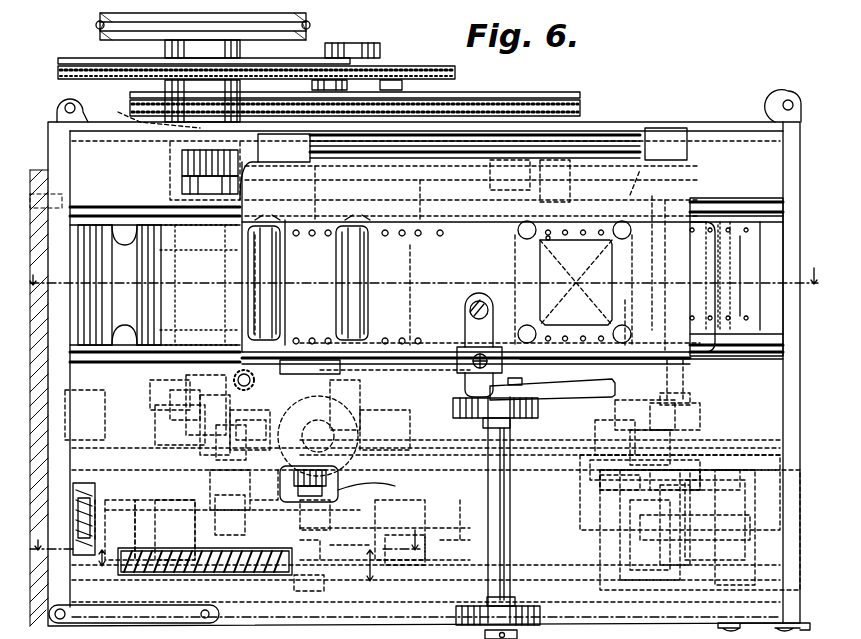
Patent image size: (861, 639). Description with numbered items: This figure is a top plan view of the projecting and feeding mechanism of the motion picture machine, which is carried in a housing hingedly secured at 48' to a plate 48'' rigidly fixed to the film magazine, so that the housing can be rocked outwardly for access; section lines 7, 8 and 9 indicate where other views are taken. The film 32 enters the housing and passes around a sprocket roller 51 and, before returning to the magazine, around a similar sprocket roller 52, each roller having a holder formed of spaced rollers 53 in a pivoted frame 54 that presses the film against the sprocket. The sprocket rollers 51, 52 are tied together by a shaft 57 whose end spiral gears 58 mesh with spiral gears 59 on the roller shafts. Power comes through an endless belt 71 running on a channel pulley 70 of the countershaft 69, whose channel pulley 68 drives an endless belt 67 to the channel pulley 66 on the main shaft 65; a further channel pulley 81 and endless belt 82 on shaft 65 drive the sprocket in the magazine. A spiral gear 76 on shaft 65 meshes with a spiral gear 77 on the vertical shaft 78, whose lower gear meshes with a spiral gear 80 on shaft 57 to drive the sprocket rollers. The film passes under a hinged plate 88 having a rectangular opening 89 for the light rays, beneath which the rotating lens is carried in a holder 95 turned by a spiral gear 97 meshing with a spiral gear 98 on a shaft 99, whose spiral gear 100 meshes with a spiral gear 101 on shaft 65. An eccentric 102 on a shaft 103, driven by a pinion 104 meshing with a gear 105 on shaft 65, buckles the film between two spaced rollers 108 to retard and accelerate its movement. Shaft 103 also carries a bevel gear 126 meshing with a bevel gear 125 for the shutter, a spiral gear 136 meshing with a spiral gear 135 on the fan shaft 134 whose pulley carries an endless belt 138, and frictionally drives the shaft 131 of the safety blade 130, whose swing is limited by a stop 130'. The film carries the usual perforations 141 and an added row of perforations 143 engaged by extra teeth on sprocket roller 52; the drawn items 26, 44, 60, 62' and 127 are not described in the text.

The section line 7- 7 is at (224, 543).
The section line 8- 8 is at (235, 565).
The section line 9- 9 is at (418, 285).
The cam 26 is at (578, 181).
The film 32 is at (738, 277).
The bolt 44 is at (640, 322).
The hinge 48' is at (57, 107).
The plate 48'' is at (411, 374).
The sprocket roller 51 is at (698, 532).
The sprocket roller 52 is at (192, 485).
The spaced rollers 53 is at (760, 525).
The frame 54 is at (622, 533).
The shaft 57 is at (448, 386).
The spiral gears 58 is at (714, 392).
The spiral gears 59 is at (158, 415).
The block 60 is at (755, 220).
The piston 62' is at (159, 285).
The shaft 65 is at (125, 118).
The channel pulley 66 is at (80, 58).
The endless belt 67 is at (58, 72).
The channel pulley 68 is at (422, 55).
The countershaft 69 is at (368, 46).
The channel pulley 70 is at (582, 92).
The endless belt 71 is at (582, 104).
The spiral gear 76 is at (170, 394).
The spiral gear 77 is at (180, 378).
The vertical shaft 78 is at (255, 384).
The spiral gear 80 is at (263, 479).
The channel pulley 81 is at (308, 15).
The endless belt 82 is at (310, 26).
The plate 88 is at (478, 257).
The rectangular opening 89 is at (546, 266).
The holder 95 is at (639, 182).
The spiral gear 97 is at (600, 168).
The spiral gear 98 is at (548, 188).
The shaft 99 is at (407, 287).
The spiral gear 100 is at (182, 186).
The spiral gear 101 is at (182, 162).
The eccentric 102 is at (322, 228).
The shaft 103 is at (340, 380).
The pinion 104 is at (338, 578).
The gear 105 is at (240, 568).
The spaced rollers 108 is at (344, 279).
The bevel gear 125 is at (340, 476).
The bevel gear 126 is at (380, 491).
The rod 127 is at (98, 498).
The blade 130 is at (540, 395).
The stop 130' is at (539, 373).
The shaft 131 is at (498, 503).
The shaft 134 is at (425, 519).
The spiral gear 135 is at (330, 546).
The spiral gear 136 is at (298, 540).
The endless belt 138 is at (84, 495).
The perforations 141 is at (746, 230).
The perforations 143 is at (592, 276).